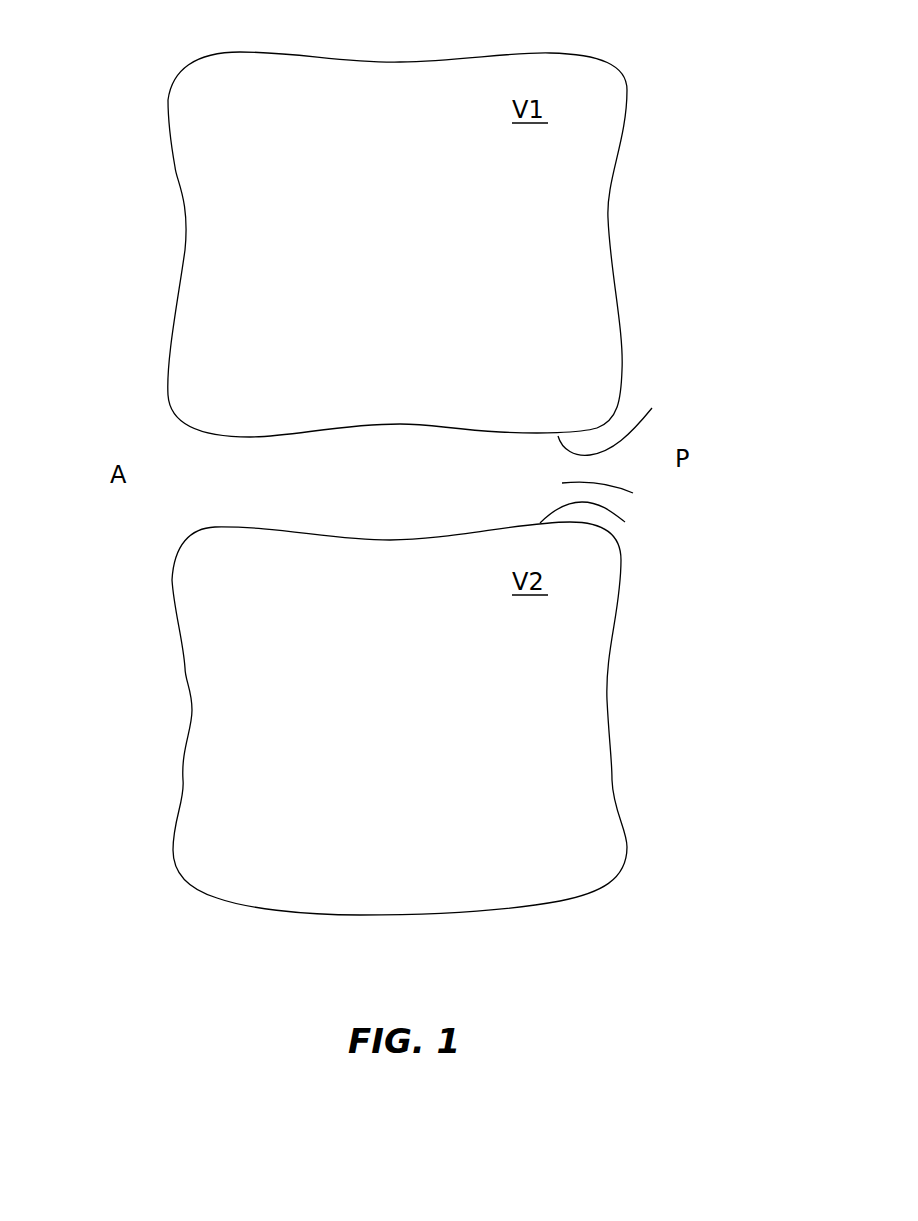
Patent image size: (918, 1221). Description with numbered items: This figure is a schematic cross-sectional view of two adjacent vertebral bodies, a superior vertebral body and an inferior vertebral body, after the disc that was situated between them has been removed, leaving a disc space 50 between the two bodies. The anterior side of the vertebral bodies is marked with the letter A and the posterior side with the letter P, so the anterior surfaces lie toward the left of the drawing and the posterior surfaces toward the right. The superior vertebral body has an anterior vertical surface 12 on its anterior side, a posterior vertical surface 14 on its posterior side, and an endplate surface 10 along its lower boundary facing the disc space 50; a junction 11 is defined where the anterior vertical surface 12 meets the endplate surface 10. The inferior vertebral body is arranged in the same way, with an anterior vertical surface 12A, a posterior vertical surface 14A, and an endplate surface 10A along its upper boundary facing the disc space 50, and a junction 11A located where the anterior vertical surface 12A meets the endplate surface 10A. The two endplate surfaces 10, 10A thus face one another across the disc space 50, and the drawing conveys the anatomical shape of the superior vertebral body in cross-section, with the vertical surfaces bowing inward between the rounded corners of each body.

The endplate surface 10 is at (652, 408).
The endplate surface 10A is at (625, 522).
The junction 11 is at (170, 434).
The junction 11A is at (172, 519).
The anterior vertical surface 12 is at (175, 167).
The anterior vertical surface 12A is at (185, 668).
The posterior vertical surface 14 is at (610, 218).
The posterior vertical surface 14A is at (612, 660).
The disc space 50 is at (633, 493).